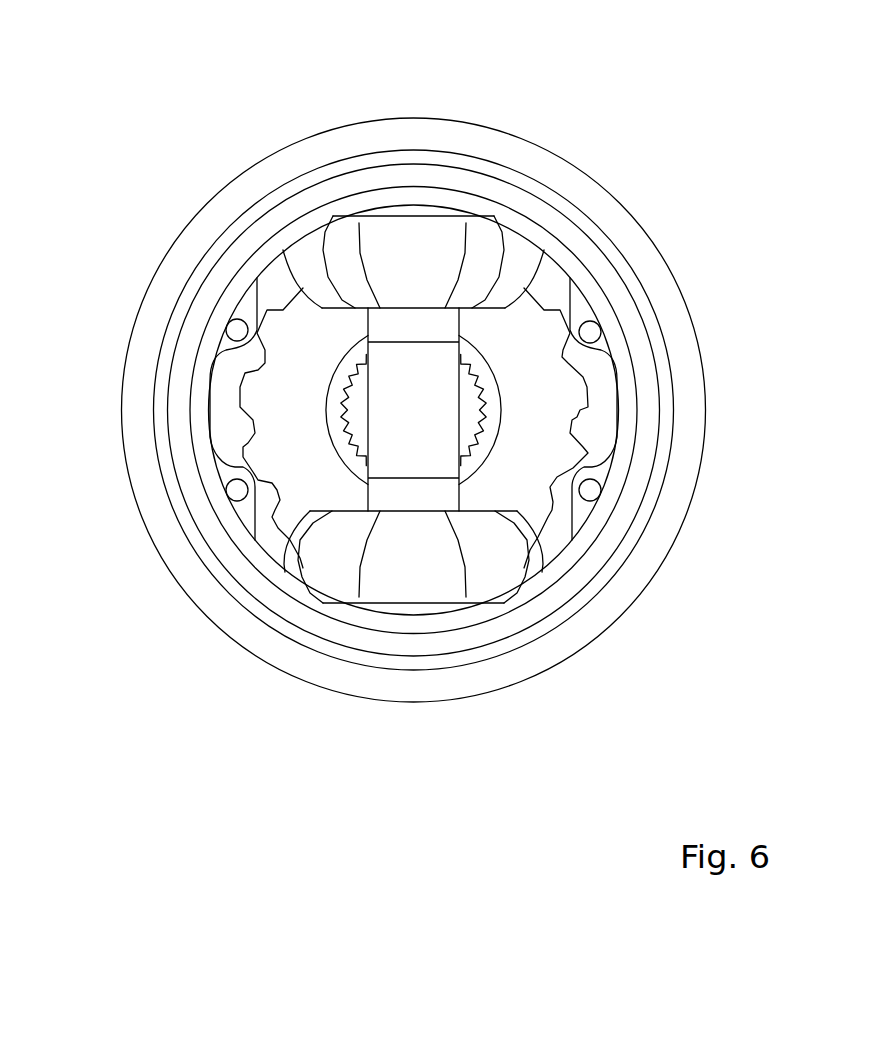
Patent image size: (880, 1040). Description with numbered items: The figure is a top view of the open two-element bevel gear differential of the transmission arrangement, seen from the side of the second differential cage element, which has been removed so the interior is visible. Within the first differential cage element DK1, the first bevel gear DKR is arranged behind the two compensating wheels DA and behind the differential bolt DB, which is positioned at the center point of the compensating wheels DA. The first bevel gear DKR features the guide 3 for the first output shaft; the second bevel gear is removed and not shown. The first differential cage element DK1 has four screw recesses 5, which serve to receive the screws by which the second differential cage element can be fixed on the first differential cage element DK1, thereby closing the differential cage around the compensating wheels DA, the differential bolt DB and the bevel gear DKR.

The differential bolt DB is at (417, 397).
The compensating wheels DA is at (418, 268).
The first differential cage element DK1 is at (555, 222).
The first bevel gear DKR is at (540, 413).
The screw recesses 5 is at (237, 330).
The guide 3 is at (358, 408).